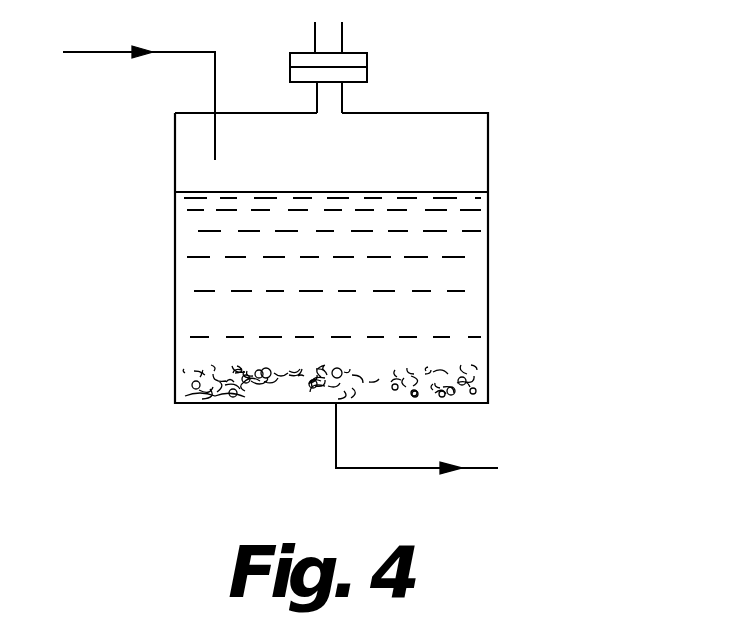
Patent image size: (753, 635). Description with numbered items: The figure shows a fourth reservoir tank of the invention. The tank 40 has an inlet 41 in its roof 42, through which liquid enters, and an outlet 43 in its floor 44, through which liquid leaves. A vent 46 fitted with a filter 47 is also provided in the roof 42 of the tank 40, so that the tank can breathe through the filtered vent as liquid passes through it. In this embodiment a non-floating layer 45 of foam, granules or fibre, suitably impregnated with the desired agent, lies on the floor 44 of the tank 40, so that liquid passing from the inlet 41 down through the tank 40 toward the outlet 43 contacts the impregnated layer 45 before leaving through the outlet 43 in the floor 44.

The tank 40 is at (493, 273).
The inlet 41 is at (216, 112).
The roof 42 is at (460, 113).
The outlet 43 is at (340, 405).
The floor 44 is at (243, 403).
The non-floating layer 45 is at (443, 366).
The vent 46 is at (344, 98).
The filter 47 is at (352, 60).